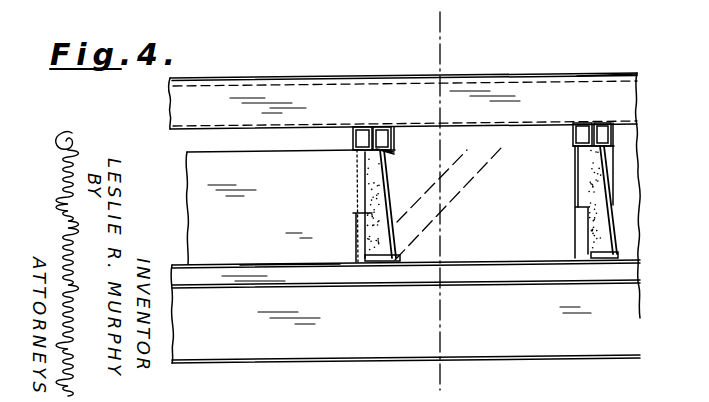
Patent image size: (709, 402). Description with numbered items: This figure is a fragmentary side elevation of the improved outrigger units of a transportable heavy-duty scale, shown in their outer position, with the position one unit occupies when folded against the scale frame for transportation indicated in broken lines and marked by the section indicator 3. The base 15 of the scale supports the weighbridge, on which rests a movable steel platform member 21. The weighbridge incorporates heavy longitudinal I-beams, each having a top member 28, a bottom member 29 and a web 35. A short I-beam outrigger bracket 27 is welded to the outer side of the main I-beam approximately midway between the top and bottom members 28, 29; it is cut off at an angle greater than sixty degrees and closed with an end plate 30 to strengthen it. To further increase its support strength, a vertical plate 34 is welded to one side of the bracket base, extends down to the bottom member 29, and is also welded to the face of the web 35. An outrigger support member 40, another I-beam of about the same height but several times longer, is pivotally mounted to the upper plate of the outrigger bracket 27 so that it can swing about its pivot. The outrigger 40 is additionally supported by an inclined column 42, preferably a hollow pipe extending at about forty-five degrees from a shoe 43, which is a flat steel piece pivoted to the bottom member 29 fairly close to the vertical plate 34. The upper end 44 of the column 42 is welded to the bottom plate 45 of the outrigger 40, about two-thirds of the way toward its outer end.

The section line 3- 3 is at (397, 28).
The base 15 is at (633, 330).
The platform member 21 is at (340, 78).
The outrigger bracket 27 is at (355, 183).
The top member 28 is at (578, 75).
The bottom member 29 is at (264, 263).
The end plate 30 is at (388, 182).
The vertical plate 34 is at (356, 243).
The web 35 is at (270, 208).
The outrigger support member 40 is at (356, 132).
The inclined column 42 is at (365, 219).
The shoe 43 is at (400, 258).
The upper end 44 is at (392, 151).
The bottom plate 45 is at (396, 127).